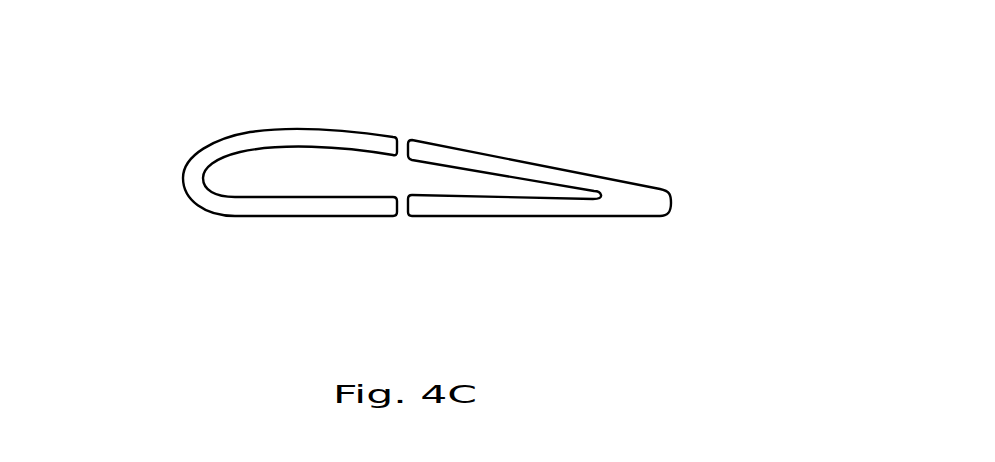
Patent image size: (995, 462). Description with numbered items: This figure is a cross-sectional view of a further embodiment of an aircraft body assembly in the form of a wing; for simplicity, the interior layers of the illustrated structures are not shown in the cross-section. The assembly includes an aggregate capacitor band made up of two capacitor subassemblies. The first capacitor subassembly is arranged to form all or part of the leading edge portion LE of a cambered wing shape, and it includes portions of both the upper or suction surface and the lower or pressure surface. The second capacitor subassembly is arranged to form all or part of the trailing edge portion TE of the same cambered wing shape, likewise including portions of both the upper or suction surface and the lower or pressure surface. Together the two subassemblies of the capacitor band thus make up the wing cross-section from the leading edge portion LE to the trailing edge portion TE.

The leading edge portion LE is at (166, 178).
The trailing edge portion TE is at (694, 206).